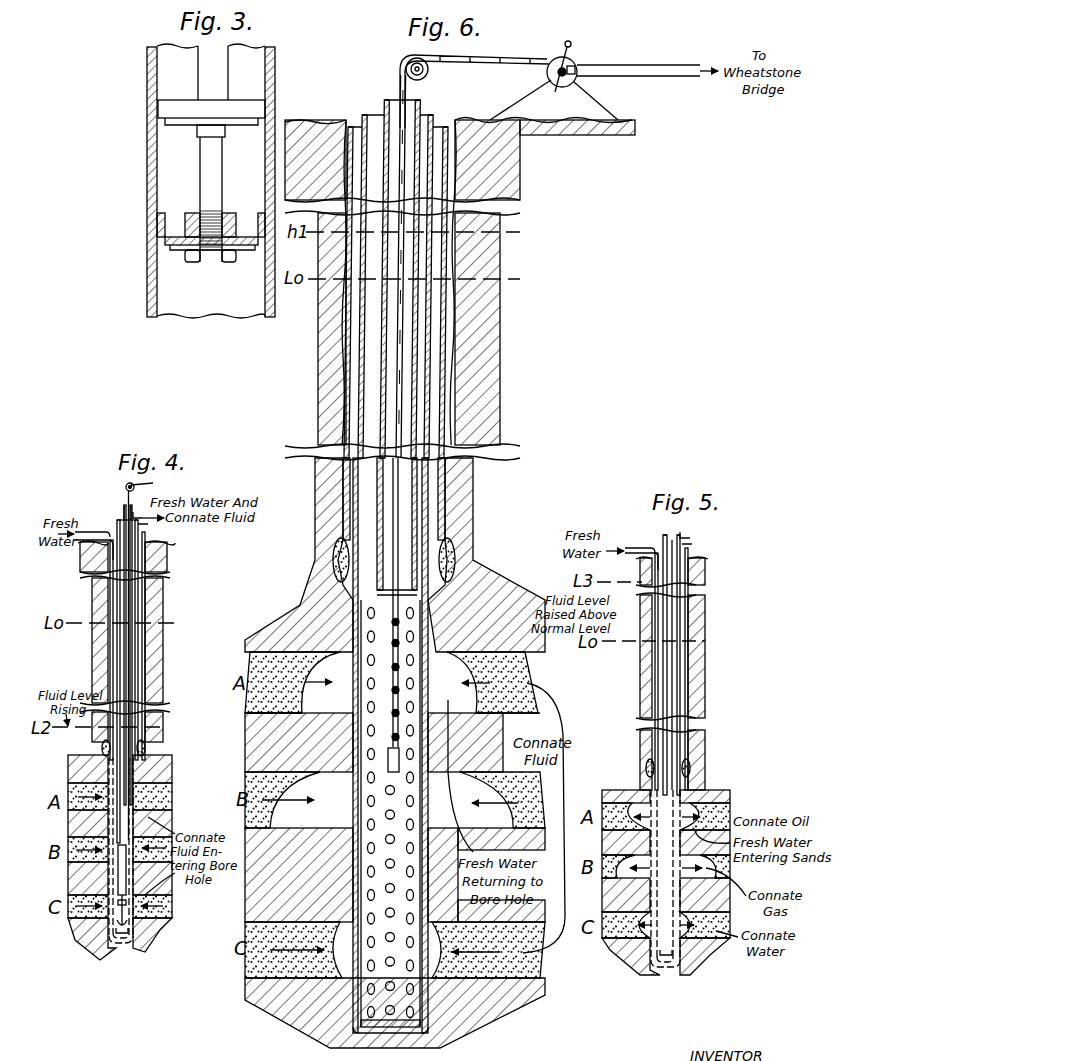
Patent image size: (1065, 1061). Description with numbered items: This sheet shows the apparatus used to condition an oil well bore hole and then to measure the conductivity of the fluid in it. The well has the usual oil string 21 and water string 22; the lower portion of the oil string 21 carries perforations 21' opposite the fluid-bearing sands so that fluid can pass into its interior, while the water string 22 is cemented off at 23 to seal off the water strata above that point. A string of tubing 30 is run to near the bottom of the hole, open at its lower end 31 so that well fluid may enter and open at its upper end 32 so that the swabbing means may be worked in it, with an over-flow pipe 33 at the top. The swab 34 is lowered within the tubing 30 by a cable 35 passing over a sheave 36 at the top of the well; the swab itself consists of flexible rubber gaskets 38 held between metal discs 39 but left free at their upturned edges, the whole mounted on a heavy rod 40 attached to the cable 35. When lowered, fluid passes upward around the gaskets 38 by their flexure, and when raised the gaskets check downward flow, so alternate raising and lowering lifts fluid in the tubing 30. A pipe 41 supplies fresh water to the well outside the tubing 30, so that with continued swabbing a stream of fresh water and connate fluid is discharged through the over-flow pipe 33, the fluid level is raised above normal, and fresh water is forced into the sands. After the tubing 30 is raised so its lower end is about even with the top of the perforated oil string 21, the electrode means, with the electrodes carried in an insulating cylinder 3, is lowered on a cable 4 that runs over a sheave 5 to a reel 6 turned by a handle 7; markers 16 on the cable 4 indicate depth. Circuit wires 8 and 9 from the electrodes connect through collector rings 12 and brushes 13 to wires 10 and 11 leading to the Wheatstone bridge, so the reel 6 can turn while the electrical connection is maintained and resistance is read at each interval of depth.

In FIG. 6, the cylinder 3 is at (389, 760).
In FIG. 6, the cable 4 is at (396, 504).
In FIG. 6, the sheave 5 is at (429, 70).
In FIG. 6, the reel 6 is at (547, 70).
In FIG. 6, the handle 7 is at (565, 44).
In FIG. 6, the electric circuit wire 8 is at (400, 745).
In FIG. 6, the electric circuit wire 9 is at (392, 746).
In FIG. 6, the wire 10 is at (668, 77).
In FIG. 6, the wire 11 is at (683, 65).
In FIG. 6, the collector rings 12 is at (558, 86).
In FIG. 6, the brushes 13 is at (573, 67).
In FIG. 6, the markers 16 is at (399, 380).
In FIG. 6, the oil string 21 is at (359, 286).
In FIG. 4, the oil string 21 is at (151, 646).
In FIG. 5, the oil string 21 is at (694, 669).
In FIG. 6, the perforations 21' is at (329, 872).
In FIG. 4, the perforations 21' is at (109, 761).
In FIG. 5, the perforations 21' is at (650, 832).
In FIG. 6, the water string 22 is at (358, 395).
In FIG. 4, the water string 22 is at (140, 641).
In FIG. 5, the water string 22 is at (686, 694).
In FIG. 6, the cementing 23 is at (333, 559).
In FIG. 3, the string of tubing 30 is at (150, 183).
In FIG. 4, the string of tubing 30 is at (134, 772).
In FIG. 5, the string of tubing 30 is at (673, 792).
In FIG. 6, the open lower end of tubing 31 is at (386, 594).
In FIG. 4, the open lower end of tubing 31 is at (118, 937).
In FIG. 5, the open lower end of tubing 31 is at (663, 957).
In FIG. 4, the open upper end of tubing 32 is at (123, 512).
In FIG. 5, the open upper end of tubing 32 is at (665, 532).
In FIG. 4, the over-flow pipe 33 is at (144, 527).
In FIG. 5, the over-flow pipe 33 is at (694, 540).
In FIG. 3, the swab 34 is at (212, 166).
In FIG. 4, the swab 34 is at (118, 922).
In FIG. 4, the cable 35 is at (125, 668).
In FIG. 4, the sheave 36 is at (126, 486).
In FIG. 3, the flexible rubber gaskets 38 is at (170, 105).
In FIG. 3, the metal discs 39 is at (250, 232).
In FIG. 3, the rod 40 is at (224, 73).
In FIG. 4, the rod 40 is at (120, 870).
In FIG. 4, the pipe 41 is at (95, 532).
In FIG. 5, the pipe 41 is at (634, 548).